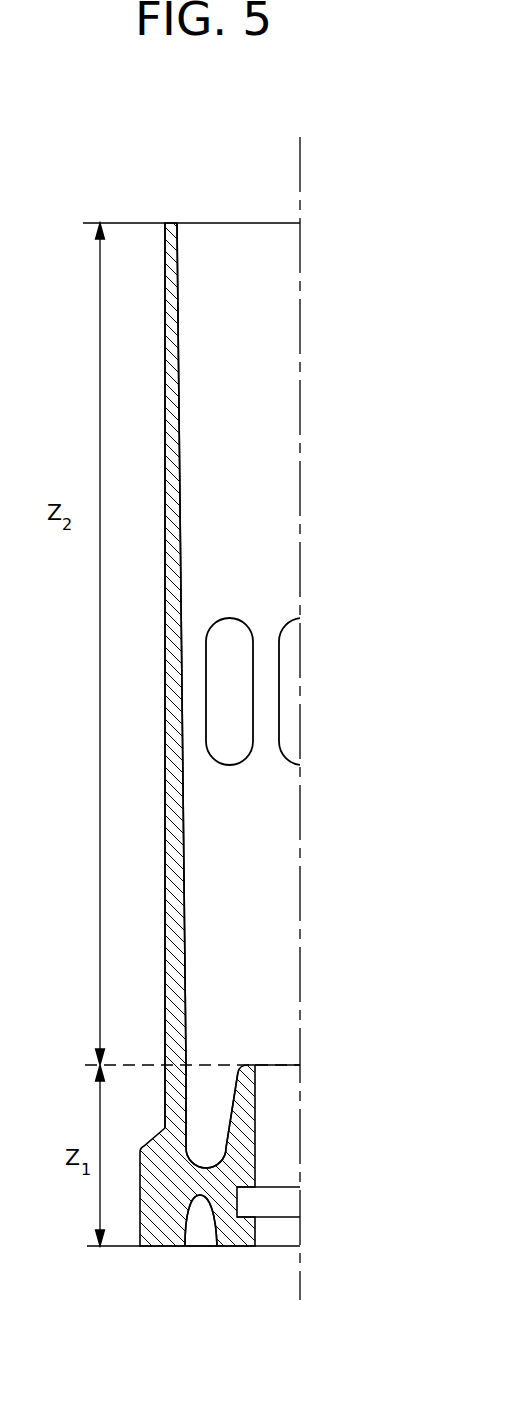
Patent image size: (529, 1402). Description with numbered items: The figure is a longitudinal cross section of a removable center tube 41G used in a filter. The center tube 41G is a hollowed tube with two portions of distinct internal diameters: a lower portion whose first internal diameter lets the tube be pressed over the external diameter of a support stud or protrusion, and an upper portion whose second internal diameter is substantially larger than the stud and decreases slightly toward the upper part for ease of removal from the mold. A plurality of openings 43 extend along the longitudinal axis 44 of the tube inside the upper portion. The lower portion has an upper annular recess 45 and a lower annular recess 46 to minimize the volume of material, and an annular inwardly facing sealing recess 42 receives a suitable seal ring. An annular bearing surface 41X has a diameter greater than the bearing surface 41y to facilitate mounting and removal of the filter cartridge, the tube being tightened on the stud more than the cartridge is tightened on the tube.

The annular bearing surface 41X is at (162, 1212).
The bearing surface 41y is at (175, 933).
The removable center tube 41G is at (187, 1248).
The annular inwardly facing sealing recess 42 is at (238, 1202).
The openings 43 is at (288, 620).
The longitudinal axis 44 is at (300, 172).
The upper annular recess 45 is at (208, 1113).
The lower annular recess 46 is at (203, 1225).